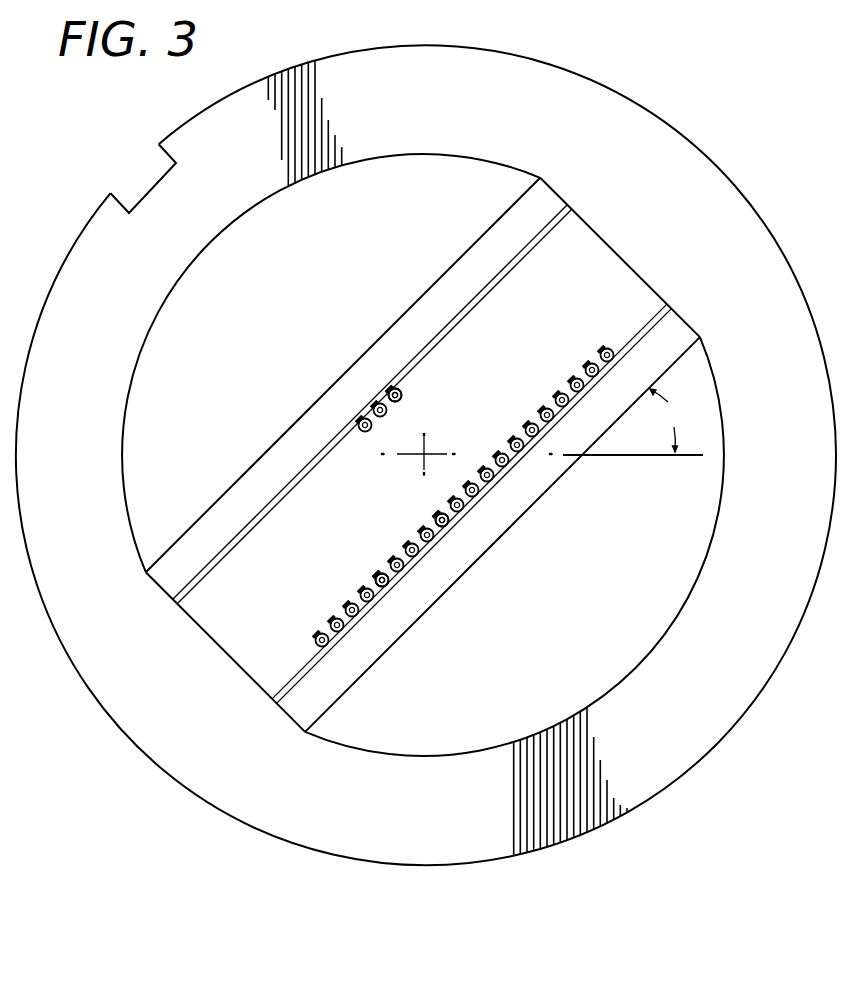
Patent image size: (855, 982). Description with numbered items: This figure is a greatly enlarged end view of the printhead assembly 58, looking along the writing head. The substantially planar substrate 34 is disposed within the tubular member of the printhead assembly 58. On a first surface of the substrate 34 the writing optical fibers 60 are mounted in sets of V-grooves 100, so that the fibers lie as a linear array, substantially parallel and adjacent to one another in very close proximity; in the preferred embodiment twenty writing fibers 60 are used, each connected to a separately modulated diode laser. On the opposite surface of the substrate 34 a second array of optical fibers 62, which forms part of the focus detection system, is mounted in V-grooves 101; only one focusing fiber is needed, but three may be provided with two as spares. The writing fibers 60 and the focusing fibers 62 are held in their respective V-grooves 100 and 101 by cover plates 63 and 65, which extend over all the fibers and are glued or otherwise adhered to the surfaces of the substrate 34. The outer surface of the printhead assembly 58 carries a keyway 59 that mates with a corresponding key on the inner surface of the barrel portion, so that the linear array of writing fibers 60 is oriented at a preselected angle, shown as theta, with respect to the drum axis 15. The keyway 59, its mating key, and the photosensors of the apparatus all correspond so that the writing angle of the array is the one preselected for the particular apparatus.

The printhead assembly 58 is at (426, 455).
The keyway 59 is at (122, 208).
The substrate 34 is at (550, 331).
The cover plate 65 is at (325, 392).
The cover plate 63 is at (425, 600).
The optical fibers 60 is at (420, 548).
The V-grooves 100 is at (445, 512).
The optical fibers 62 is at (377, 400).
The V-grooves 101 is at (392, 407).
The drum axis 15 is at (632, 458).